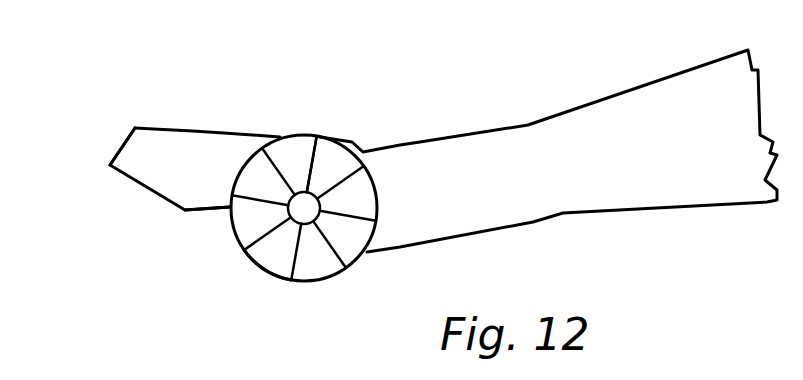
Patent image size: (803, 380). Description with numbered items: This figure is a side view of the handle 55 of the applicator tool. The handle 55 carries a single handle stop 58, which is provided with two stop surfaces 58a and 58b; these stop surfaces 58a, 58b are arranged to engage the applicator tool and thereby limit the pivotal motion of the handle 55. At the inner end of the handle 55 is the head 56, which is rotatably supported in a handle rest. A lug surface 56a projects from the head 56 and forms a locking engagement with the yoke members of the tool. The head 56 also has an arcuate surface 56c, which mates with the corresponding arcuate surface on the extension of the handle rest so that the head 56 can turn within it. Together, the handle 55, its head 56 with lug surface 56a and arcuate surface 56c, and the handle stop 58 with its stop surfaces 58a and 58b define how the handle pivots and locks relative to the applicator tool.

The handle 55 is at (688, 83).
The head 56 is at (312, 263).
The lug surface 56a is at (303, 143).
The arcuate surface 56c is at (250, 260).
The handle stop 58 is at (152, 178).
The stop surface 58a is at (193, 214).
The stop surface 58b is at (112, 170).